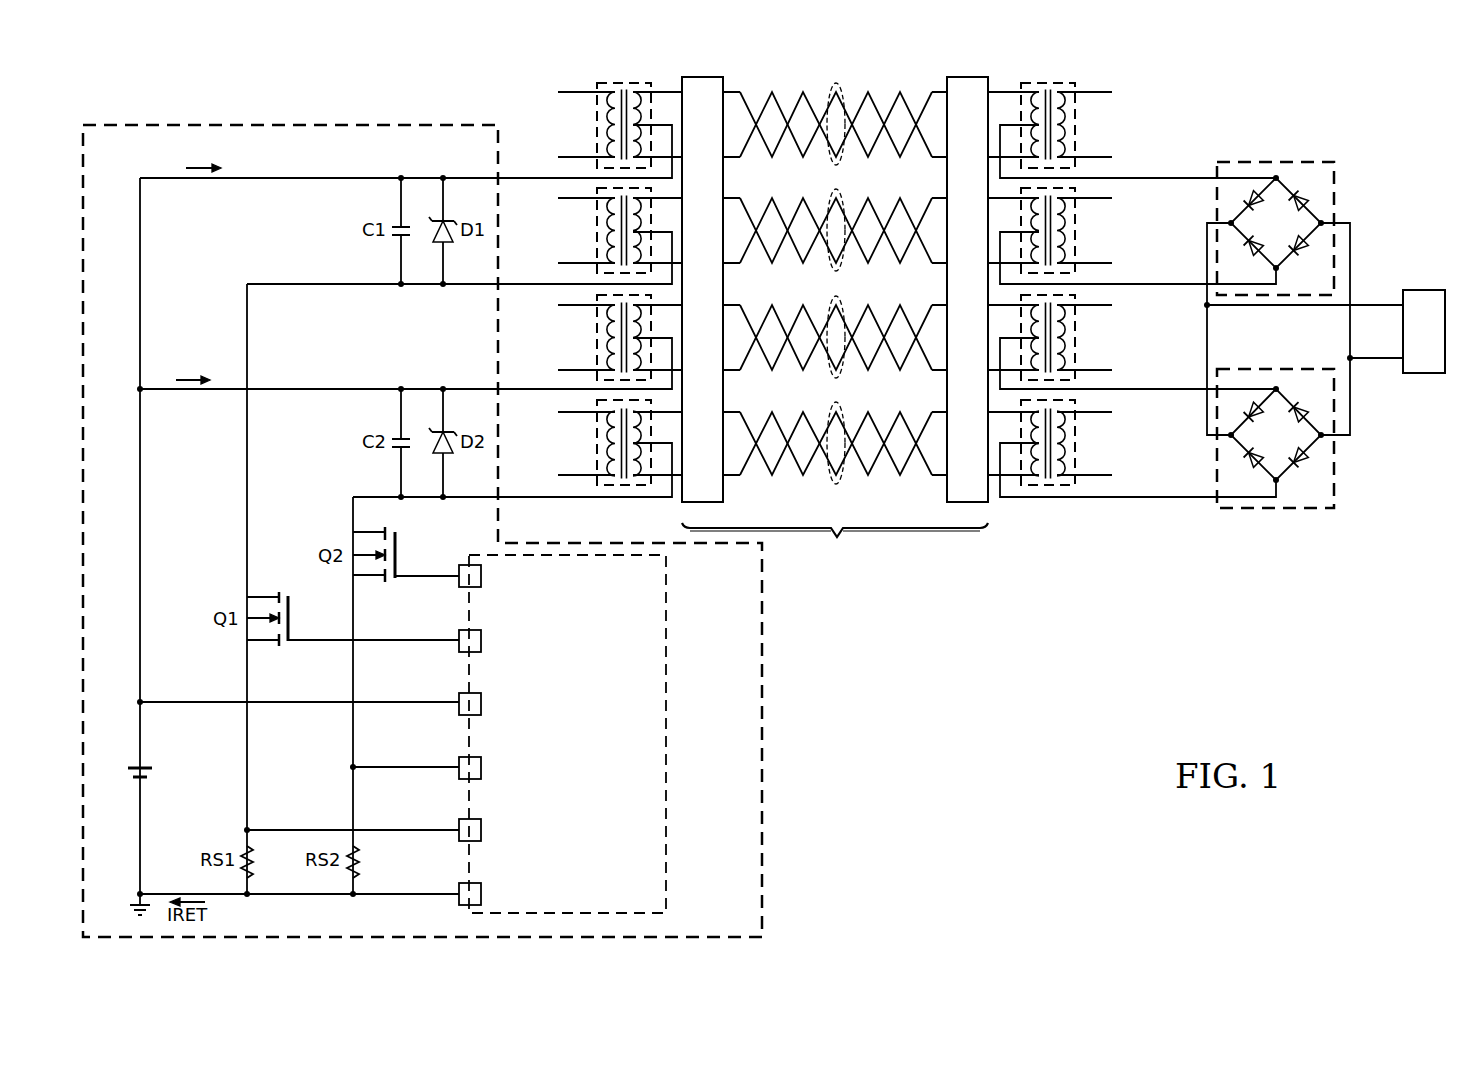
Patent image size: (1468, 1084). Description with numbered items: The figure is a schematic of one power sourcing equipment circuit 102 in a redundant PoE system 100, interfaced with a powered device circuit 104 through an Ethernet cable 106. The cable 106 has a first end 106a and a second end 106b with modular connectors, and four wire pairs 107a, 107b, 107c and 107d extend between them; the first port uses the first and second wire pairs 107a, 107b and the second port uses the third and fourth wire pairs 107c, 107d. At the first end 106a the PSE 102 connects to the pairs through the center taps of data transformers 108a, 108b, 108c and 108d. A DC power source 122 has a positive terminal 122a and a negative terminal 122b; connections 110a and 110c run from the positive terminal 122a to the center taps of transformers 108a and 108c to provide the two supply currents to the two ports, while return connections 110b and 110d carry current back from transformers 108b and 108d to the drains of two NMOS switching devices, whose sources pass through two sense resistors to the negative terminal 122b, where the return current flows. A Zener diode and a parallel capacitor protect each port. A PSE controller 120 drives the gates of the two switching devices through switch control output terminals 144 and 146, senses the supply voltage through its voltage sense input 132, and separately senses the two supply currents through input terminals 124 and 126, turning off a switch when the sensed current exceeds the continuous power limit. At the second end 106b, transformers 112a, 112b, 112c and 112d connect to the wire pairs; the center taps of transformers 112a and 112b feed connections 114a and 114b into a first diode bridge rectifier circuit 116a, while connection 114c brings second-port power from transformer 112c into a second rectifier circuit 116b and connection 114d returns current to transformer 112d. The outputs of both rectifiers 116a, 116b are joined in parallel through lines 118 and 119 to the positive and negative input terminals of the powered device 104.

The redundant PoE system 100 is at (1032, 742).
The power sourcing equipment circuit 102 is at (185, 120).
The powered device circuit 104 is at (1426, 290).
The Ethernet cable 106 is at (835, 545).
The first end of cable 106a is at (703, 503).
The second end of cable 106b is at (967, 503).
The first wire pair 107a is at (841, 168).
The second wire pair 107b is at (841, 274).
The third wire pair 107c is at (841, 381).
The fourth wire pair 107d is at (841, 486).
The data transformer 108a is at (596, 126).
The data transformer 108b is at (596, 231).
The data transformer 108c is at (596, 331).
The data transformer 108d is at (596, 436).
The connection 110a is at (223, 181).
The return connection 110b is at (327, 287).
The connection 110c is at (199, 392).
The return connection 110d is at (464, 499).
The transformer 112a is at (1077, 126).
The transformer 112b is at (1077, 232).
The transformer 112c is at (1077, 338).
The transformer 112d is at (1077, 443).
The connection 114a is at (1160, 180).
The connection 114b is at (1160, 286).
The connection 114c is at (1160, 391).
The connection 114d is at (1160, 499).
The diode bridge rectifier circuit 116a is at (1307, 155).
The second diode bridge rectifier circuit 116b is at (1307, 518).
The output connection 118 is at (1272, 307).
The output connection 119 is at (1378, 360).
The PSE controller 120 is at (676, 737).
The power source 122 is at (160, 772).
The first power source terminal 122a is at (143, 743).
The second power source terminal 122b is at (143, 800).
The input terminal 124 is at (394, 832).
The input terminal 126 is at (394, 769).
The VSEN voltage sense connection 132 is at (394, 704).
The switch control output terminal 144 is at (394, 642).
The switch control output terminal 146 is at (416, 578).